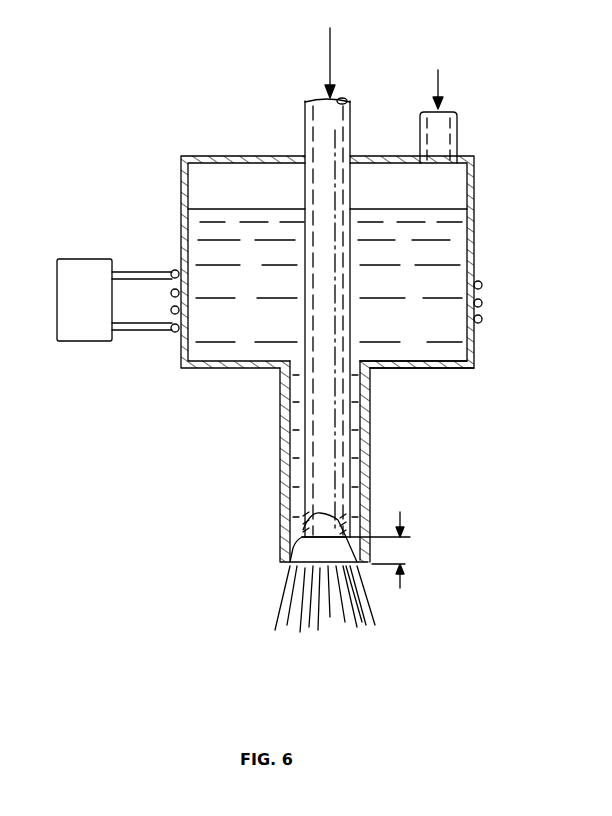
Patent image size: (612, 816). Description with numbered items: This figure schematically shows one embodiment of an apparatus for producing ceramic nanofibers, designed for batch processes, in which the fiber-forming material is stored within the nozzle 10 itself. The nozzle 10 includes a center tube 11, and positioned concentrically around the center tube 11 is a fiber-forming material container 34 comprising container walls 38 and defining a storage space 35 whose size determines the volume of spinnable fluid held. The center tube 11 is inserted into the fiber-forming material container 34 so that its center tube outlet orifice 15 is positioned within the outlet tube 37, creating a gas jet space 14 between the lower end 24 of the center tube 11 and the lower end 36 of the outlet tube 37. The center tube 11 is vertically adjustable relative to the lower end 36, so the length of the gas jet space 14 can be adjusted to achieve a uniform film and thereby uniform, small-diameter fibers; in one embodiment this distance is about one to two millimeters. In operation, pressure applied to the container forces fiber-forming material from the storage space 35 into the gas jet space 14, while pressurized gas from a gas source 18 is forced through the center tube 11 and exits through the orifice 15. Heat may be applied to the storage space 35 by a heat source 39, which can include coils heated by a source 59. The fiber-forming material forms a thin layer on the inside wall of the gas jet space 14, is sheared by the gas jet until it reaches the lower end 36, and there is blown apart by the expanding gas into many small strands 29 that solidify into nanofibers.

The nozzle 10 is at (138, 179).
The center tube 11 is at (348, 470).
The gas jet space 14 is at (404, 578).
The center tube outlet orifice 15 is at (332, 534).
The gas source 18 is at (333, 45).
The lower end of center tube 24 is at (363, 578).
The strands 29 is at (308, 612).
The fiber-forming material container 34 is at (483, 230).
The storage space 35 is at (447, 197).
The lower end of outlet tube 36 is at (287, 563).
The outlet tube 37 is at (274, 468).
The container walls 38 is at (426, 369).
The heat source 39 is at (486, 303).
The source 59 is at (78, 334).